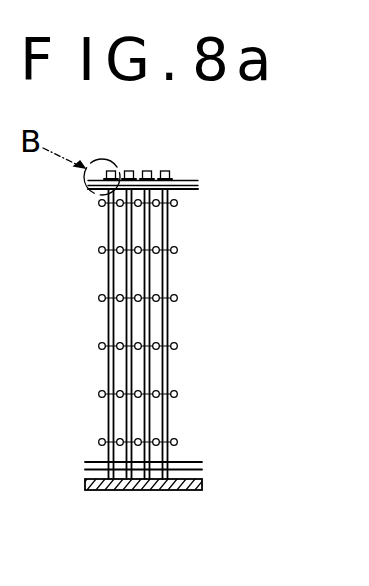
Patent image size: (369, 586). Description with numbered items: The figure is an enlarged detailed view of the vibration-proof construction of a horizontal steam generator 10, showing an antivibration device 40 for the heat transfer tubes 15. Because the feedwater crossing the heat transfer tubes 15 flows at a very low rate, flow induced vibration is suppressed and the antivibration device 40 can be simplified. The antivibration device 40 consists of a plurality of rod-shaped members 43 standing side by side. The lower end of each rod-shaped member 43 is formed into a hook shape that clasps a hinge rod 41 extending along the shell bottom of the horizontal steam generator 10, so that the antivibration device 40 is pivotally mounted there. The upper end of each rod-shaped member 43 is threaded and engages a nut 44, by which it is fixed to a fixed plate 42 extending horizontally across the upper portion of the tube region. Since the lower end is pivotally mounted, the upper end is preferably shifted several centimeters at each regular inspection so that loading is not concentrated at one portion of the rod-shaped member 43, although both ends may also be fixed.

The horizontal steam generator 10 is at (160, 490).
The heat transfer tubes 15 is at (178, 203).
The antivibration device 40 is at (183, 330).
The hinge rod 41 is at (183, 462).
The fixed plate 42 is at (187, 182).
The rod-shaped member 43 is at (170, 228).
The nut 44 is at (170, 176).